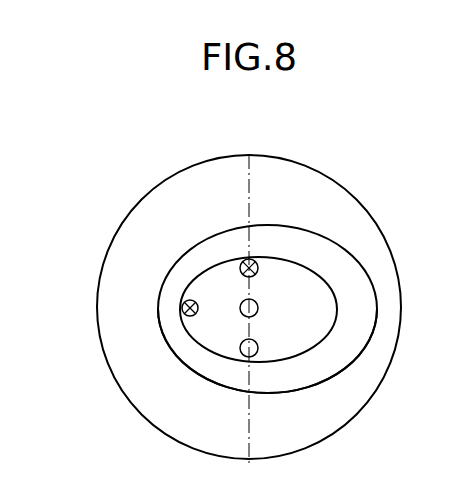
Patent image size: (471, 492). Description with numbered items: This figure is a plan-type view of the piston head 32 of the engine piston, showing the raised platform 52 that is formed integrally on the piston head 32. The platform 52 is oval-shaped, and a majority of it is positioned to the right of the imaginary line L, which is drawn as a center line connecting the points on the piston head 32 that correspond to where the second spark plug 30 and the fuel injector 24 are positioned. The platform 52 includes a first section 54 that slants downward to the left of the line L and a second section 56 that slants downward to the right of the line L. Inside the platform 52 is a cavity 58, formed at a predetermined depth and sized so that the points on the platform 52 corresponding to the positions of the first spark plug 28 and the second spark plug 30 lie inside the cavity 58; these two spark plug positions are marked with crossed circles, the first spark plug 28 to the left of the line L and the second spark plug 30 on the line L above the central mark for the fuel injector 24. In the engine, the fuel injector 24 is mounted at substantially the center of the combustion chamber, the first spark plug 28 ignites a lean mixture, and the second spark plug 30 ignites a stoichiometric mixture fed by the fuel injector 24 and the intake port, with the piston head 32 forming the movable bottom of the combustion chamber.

The fuel injector 24 is at (244, 298).
The first spark plug 28 is at (182, 304).
The second spark plug 30 is at (252, 260).
The piston head 32 is at (113, 243).
The raised platform 52 is at (182, 272).
The first section 54 is at (183, 345).
The second section 56 is at (323, 367).
The cavity 58 is at (300, 280).
The imaginary line L is at (248, 190).